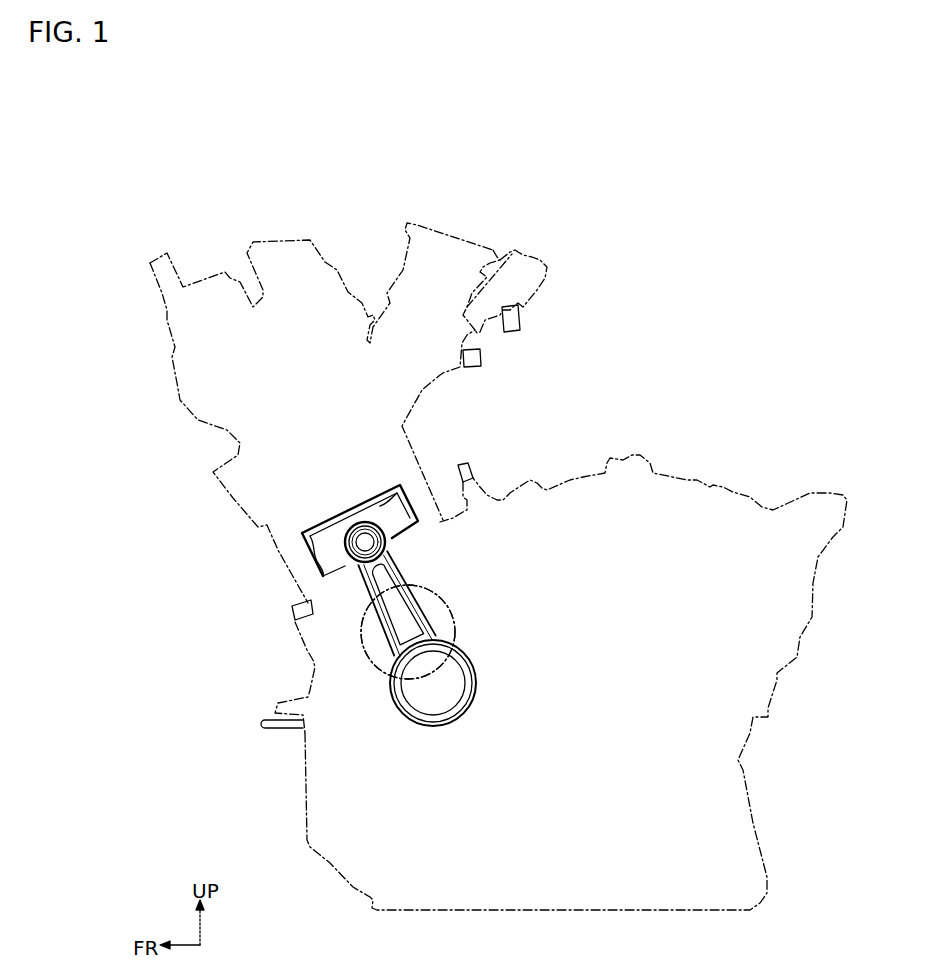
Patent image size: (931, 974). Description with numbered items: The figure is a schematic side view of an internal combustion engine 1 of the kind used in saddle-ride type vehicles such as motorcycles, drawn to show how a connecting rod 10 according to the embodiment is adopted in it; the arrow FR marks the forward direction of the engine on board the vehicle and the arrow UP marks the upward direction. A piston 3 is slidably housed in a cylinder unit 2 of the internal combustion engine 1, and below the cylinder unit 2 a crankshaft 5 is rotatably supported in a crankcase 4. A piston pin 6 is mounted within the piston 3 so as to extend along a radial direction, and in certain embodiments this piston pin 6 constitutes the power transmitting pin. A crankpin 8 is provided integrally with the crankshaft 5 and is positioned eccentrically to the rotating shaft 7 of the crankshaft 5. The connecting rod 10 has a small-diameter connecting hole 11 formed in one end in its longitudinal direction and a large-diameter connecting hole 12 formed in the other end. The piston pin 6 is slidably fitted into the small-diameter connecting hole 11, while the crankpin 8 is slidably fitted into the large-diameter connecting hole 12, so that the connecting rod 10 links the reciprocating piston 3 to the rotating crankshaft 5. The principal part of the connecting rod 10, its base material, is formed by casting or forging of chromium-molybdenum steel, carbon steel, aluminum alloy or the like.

The internal combustion engine 1 is at (570, 257).
The cylinder unit 2 is at (233, 498).
The piston 3 is at (308, 547).
The crankcase 4 is at (687, 480).
The crankshaft 5 is at (337, 707).
The piston pin 6 is at (367, 544).
The rotating shaft 7 is at (360, 680).
The crankpin 8 is at (418, 698).
The connecting rod 10 is at (406, 573).
The small-diameter connecting hole 11 is at (340, 580).
The large-diameter connecting hole 12 is at (462, 677).